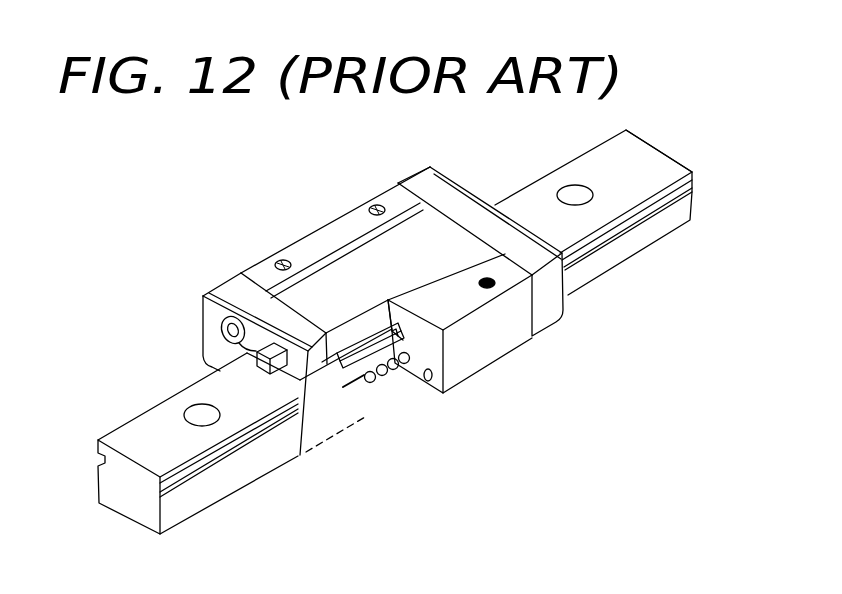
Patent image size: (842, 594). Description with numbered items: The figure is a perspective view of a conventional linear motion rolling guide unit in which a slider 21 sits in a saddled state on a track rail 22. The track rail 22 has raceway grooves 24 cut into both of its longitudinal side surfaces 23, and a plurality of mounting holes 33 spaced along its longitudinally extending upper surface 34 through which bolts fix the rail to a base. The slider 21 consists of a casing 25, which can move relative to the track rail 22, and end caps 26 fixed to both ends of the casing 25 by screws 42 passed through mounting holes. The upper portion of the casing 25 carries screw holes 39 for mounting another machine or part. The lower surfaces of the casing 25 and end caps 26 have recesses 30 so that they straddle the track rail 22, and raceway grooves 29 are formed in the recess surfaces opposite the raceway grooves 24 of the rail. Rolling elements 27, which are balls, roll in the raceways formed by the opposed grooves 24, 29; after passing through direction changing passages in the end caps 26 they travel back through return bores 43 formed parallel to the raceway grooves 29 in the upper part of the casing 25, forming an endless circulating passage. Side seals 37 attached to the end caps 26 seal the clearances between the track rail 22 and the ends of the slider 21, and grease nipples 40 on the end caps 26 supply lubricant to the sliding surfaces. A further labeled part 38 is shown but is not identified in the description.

The slider 21 is at (296, 236).
The track rail 22 is at (628, 148).
The longitudinal side surfaces 23 is at (98, 483).
The raceway grooves 24 is at (93, 455).
The casing 25 is at (362, 270).
The end caps 26 is at (445, 205).
The rolling elements 27 is at (383, 382).
The raceway grooves 29 is at (405, 372).
The recesses 30 is at (394, 330).
The mounting holes 33 is at (194, 411).
The upper surface 34 is at (656, 168).
The side seals 37 is at (478, 198).
The retainer plate 38 is at (348, 388).
The screw holes 39 is at (377, 205).
The grease nipples 40 is at (268, 368).
The screws 42 is at (221, 328).
The return bores 43 is at (435, 377).